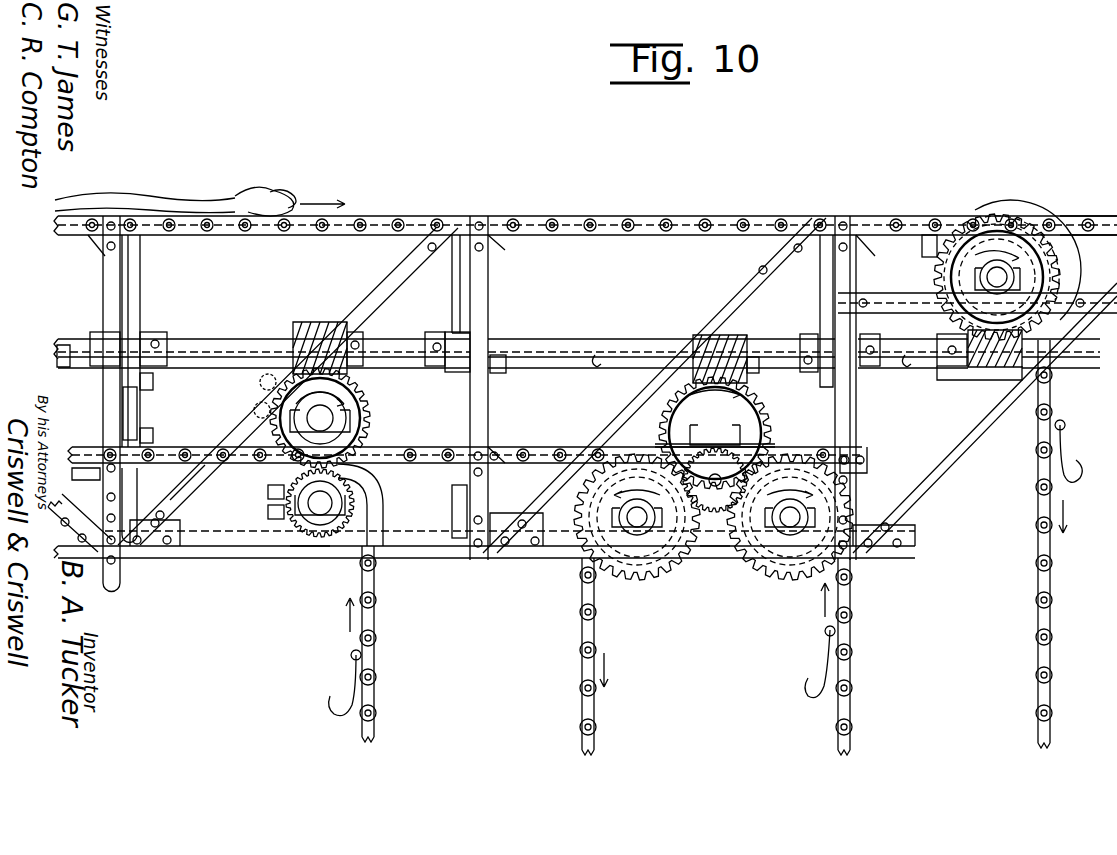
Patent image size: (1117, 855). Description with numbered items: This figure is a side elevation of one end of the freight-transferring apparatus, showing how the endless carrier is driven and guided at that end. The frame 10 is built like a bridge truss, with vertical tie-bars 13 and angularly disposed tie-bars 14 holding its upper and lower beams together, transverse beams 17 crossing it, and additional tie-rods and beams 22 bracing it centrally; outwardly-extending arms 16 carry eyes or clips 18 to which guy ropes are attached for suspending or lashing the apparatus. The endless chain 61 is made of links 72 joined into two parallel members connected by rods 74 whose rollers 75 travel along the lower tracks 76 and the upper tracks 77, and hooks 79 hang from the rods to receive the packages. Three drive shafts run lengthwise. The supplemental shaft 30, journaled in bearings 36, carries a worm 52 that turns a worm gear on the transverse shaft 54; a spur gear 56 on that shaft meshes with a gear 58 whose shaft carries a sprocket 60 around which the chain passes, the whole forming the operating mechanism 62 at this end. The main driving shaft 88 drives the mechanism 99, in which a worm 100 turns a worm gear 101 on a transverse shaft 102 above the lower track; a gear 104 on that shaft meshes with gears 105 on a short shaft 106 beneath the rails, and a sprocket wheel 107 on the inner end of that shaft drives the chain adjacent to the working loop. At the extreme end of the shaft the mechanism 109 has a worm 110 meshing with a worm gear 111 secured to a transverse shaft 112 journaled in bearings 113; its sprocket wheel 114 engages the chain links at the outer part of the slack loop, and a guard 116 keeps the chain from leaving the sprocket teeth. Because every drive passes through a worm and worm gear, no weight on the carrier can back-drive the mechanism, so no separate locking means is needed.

The frame 10 is at (255, 548).
The vertical tie-bars 13 is at (104, 497).
The angularly disposed tie-bars 14 is at (386, 286).
The outwardly-extending arms 16 is at (138, 420).
The transverse beams 17 is at (461, 408).
The eyes or clips 18 is at (153, 386).
The tie-rods and beams 22 is at (133, 290).
The supplemental shaft 30 is at (566, 368).
The bearings 36 is at (501, 373).
The worm 52 is at (748, 368).
The shaft of the worm gear 54 is at (737, 431).
The spur gear 56 is at (656, 428).
The gear 58 is at (644, 582).
The sprocket 60 is at (724, 552).
The endless chain 61 is at (582, 672).
The operating mechanism 62 is at (715, 487).
The links 72 is at (376, 618).
The rods 74 is at (378, 678).
The rollers 75 is at (378, 640).
The lower tracks 76 is at (222, 482).
The upper tracks 77 is at (416, 216).
The hooks 79 is at (262, 196).
The main driving shaft 88 is at (184, 342).
The mechanism 99 is at (310, 567).
The worm 100 is at (310, 322).
The worm gear 101 is at (262, 380).
The transverse shaft 102 is at (322, 418).
The gear 104 is at (368, 404).
The gears 105 is at (268, 495).
The short shaft 106 is at (376, 488).
The sprocket wheel 107 is at (272, 509).
The mechanism 109 is at (1088, 218).
The worm 110 is at (950, 380).
The worm gear 111 is at (936, 258).
The transverse shaft 112 is at (978, 273).
The bearings 113 is at (1053, 278).
The sprocket wheel 114 is at (930, 244).
The guard 116 is at (383, 520).